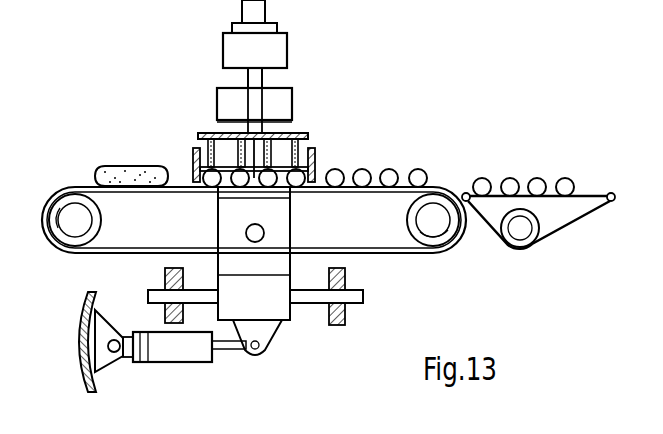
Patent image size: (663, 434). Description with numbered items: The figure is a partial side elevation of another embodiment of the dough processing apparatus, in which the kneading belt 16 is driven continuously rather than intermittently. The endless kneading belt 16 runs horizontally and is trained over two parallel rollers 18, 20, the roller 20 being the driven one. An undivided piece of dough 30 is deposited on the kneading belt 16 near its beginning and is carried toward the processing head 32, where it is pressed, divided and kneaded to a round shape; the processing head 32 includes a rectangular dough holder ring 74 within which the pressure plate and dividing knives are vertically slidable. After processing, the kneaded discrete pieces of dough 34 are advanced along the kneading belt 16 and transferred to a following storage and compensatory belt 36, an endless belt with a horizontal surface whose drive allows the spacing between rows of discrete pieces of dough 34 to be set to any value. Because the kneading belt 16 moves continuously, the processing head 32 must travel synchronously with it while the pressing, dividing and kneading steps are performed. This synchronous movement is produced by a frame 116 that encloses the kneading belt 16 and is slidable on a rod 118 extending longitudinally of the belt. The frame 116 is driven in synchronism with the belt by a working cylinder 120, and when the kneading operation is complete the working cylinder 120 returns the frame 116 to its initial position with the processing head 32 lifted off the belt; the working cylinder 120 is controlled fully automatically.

The kneading belt 16 is at (150, 188).
The roller 18 is at (56, 235).
The roller 20 is at (437, 200).
The piece of dough 30 is at (122, 165).
The processing head 32 is at (290, 69).
The discrete pieces of dough 34 is at (337, 168).
The storage and compensatory belt 36 is at (596, 191).
The dough holder ring 74 is at (317, 167).
The frame 116 is at (277, 237).
The rod 118 is at (363, 297).
The working cylinder 120 is at (173, 348).